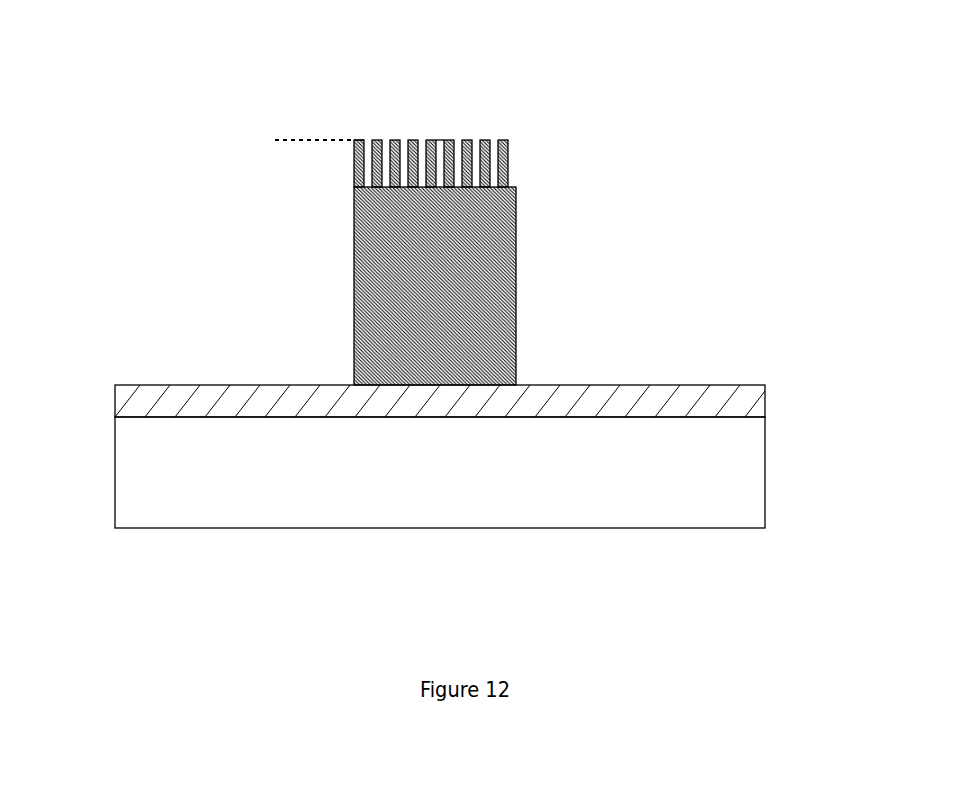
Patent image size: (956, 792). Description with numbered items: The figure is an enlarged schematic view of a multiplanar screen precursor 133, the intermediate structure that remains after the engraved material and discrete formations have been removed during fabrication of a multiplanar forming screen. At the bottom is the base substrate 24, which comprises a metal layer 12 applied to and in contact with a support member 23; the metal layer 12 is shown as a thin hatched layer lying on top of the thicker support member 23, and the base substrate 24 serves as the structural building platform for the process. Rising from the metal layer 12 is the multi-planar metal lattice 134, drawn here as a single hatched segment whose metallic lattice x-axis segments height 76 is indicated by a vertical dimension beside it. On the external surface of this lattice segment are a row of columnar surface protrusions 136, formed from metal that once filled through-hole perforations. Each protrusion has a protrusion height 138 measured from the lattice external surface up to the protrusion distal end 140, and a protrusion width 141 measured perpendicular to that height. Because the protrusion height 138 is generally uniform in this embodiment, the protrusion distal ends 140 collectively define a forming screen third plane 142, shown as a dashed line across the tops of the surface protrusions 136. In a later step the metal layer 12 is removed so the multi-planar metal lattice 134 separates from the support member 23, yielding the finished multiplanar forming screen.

The metal layer 12 is at (141, 403).
The support member 23 is at (163, 497).
The base substrate 24 is at (780, 385).
The metallic lattice x-axis segments height 76 is at (352, 187).
The multiplanar screen precursor 133 is at (148, 234).
The multi-planar metal lattice 134 is at (635, 140).
The surface protrusions 136 is at (412, 140).
The protrusion height 138 is at (529, 140).
The protrusion distal end 140 is at (358, 140).
The protrusion width 141 is at (421, 129).
The forming screen third plane 142 is at (308, 129).